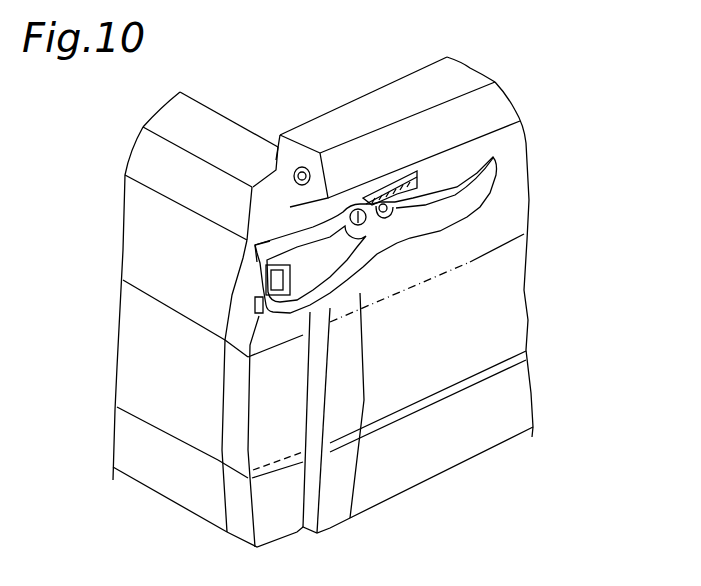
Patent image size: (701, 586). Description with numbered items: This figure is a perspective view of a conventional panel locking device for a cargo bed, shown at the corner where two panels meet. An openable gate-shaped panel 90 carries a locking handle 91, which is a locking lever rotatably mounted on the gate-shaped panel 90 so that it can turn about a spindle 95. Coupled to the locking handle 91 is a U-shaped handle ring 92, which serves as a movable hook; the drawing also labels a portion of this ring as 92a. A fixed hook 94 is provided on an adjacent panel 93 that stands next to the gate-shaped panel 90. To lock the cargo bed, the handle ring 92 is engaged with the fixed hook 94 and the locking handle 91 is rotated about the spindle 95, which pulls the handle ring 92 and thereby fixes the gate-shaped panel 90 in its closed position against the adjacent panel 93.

The gate-shaped panel 90 is at (478, 320).
The locking handle 91 is at (467, 203).
The handle ring 92 is at (330, 293).
The engaging end of lever 92a is at (250, 262).
The adjacent panel 93 is at (193, 395).
The fixed hook 94 is at (263, 285).
The spindle 95 is at (358, 212).